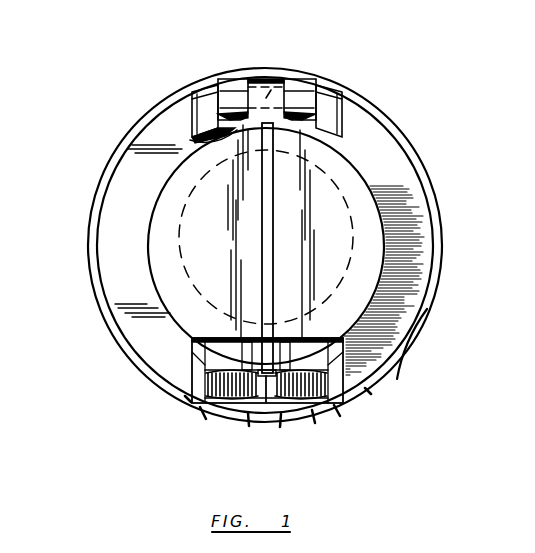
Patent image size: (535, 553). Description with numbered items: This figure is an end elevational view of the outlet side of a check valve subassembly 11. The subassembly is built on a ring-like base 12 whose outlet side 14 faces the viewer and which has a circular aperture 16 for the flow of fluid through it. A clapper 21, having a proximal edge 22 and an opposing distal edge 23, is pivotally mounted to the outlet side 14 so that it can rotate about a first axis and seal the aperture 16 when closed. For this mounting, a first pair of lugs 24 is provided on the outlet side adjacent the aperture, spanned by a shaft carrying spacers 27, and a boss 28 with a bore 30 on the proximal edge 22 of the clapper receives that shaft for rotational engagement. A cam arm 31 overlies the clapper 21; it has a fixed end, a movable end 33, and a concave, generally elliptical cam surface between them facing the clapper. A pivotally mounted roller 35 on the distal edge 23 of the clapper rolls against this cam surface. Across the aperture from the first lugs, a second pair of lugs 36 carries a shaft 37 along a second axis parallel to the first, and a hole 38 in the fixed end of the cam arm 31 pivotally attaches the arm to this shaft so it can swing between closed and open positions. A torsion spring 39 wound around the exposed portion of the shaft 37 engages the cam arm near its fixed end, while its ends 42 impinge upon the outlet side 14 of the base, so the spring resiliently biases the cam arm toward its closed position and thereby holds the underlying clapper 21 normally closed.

The check valve subassembly 11 is at (417, 142).
The ring-like base 12 is at (443, 250).
The outlet side 14 is at (418, 336).
The circular aperture 16 is at (362, 218).
The clapper 21 is at (410, 289).
The proximal edge 22 is at (197, 138).
The distal edge 23 is at (195, 368).
The first pair of lugs 24 is at (205, 90).
The spacers 27 is at (230, 86).
The boss 28 is at (265, 80).
The bore 30 is at (278, 68).
The cam arm 31 is at (260, 243).
The movable end 33 is at (200, 146).
The roller 35 is at (262, 336).
The second pair of lugs 36 is at (186, 398).
The shaft 37 is at (280, 423).
The hole 38 is at (250, 424).
The torsion spring 39 is at (318, 420).
The ends 42 is at (208, 414).